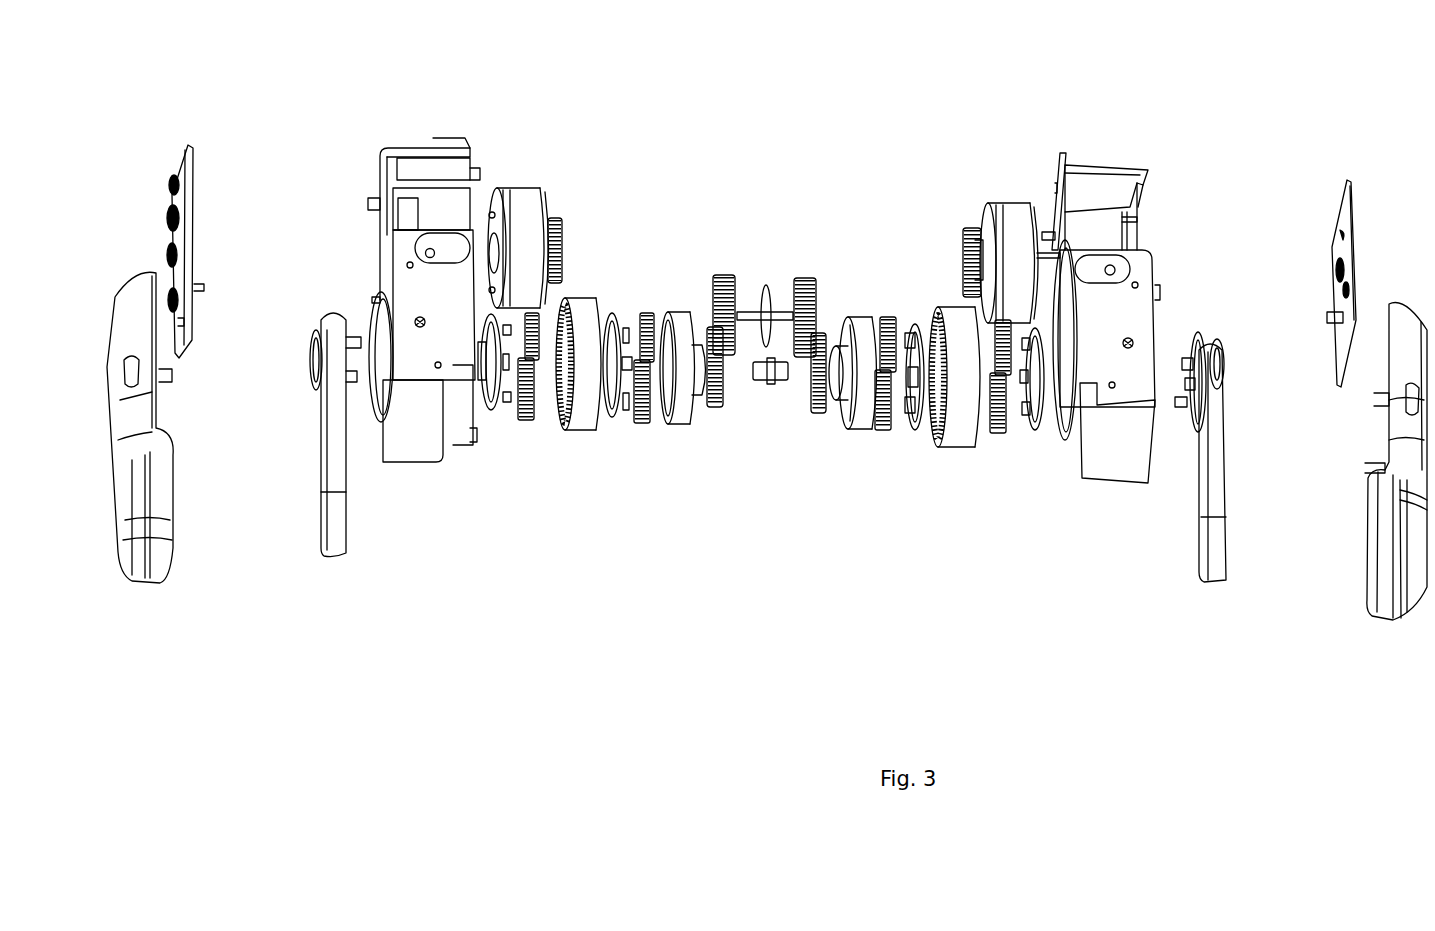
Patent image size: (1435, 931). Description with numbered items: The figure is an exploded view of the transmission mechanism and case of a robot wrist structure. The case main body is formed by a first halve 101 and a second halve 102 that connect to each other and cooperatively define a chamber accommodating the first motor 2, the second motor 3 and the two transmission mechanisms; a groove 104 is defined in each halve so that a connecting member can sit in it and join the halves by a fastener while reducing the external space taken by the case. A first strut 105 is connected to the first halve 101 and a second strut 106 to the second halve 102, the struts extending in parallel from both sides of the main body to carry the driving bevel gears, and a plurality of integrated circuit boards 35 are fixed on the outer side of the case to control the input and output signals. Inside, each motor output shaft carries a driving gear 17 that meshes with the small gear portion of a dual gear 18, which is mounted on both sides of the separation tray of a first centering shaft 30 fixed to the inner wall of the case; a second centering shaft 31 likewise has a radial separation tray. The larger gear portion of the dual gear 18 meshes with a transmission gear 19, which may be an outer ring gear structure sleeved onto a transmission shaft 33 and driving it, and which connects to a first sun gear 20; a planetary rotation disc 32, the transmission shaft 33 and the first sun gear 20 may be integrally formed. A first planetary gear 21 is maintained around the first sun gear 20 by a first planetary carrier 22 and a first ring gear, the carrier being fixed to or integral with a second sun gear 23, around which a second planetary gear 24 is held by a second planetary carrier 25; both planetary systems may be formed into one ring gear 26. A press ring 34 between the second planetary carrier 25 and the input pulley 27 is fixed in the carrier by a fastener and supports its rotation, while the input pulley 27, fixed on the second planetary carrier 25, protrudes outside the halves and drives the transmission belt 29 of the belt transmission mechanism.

The first motor 2 is at (525, 215).
The second motor 3 is at (1012, 240).
The driving gear 17 is at (972, 240).
The dual gear 18 is at (718, 280).
The transmission gear 19 is at (715, 415).
The first sun gear 20 is at (663, 370).
The first planetary gear 21 is at (882, 330).
The first planetary carrier 22 is at (920, 425).
The second sun gear 23 is at (610, 425).
The second planetary gear 24 is at (1005, 430).
The second planetary carrier 25 is at (493, 412).
The ring gear 26 is at (955, 325).
The input pulley 27 is at (1225, 365).
The transmission belt 29 is at (330, 452).
The first centering shaft 30 is at (765, 300).
The second centering shaft 31 is at (775, 390).
The planetary rotation disc 32 is at (858, 420).
The transmission shaft 33 is at (836, 350).
The press ring 34 is at (1199, 350).
The integrated circuit boards 35 is at (178, 205).
The first halve 101 is at (430, 435).
The second halve 102 is at (1110, 440).
The groove 104 is at (455, 250).
The first strut 105 is at (148, 505).
The second strut 106 is at (1405, 548).